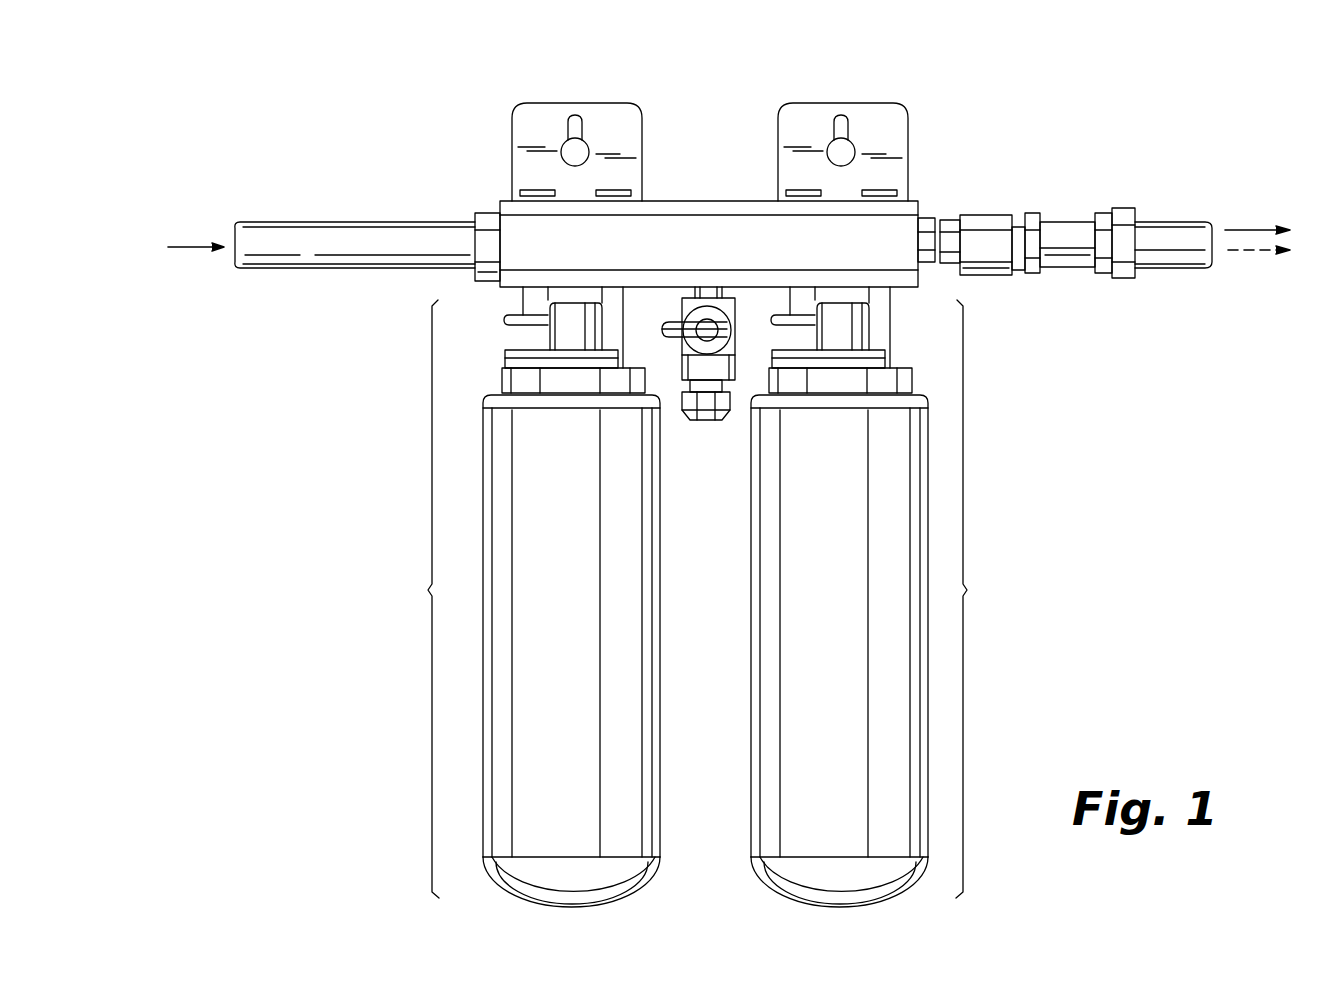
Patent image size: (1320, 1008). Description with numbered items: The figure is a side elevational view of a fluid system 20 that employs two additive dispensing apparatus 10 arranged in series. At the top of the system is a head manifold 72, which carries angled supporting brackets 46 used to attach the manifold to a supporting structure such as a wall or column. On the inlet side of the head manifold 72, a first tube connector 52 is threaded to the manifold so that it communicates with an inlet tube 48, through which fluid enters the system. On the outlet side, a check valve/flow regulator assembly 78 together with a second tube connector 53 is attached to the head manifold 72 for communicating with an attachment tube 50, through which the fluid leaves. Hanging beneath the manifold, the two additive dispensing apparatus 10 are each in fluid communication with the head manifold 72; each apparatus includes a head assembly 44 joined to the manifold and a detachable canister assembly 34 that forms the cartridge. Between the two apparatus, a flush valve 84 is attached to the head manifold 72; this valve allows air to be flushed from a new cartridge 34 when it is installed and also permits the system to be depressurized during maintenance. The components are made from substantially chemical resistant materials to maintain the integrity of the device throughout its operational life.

The additive dispensing apparatus 10 is at (699, 599).
The fluid system 20 is at (370, 190).
The canister assembly 34 is at (584, 620).
The head assembly 44 is at (527, 338).
The supporting brackets 46 is at (513, 133).
The inlet tube 48 is at (265, 248).
The attachment tube 50 is at (1175, 237).
The first tube connector 52 is at (482, 214).
The second tube connector 53 is at (1122, 255).
The head manifold 72 is at (690, 228).
The check valve/flow regulator assembly 78 is at (1108, 200).
The flush valve 84 is at (712, 366).